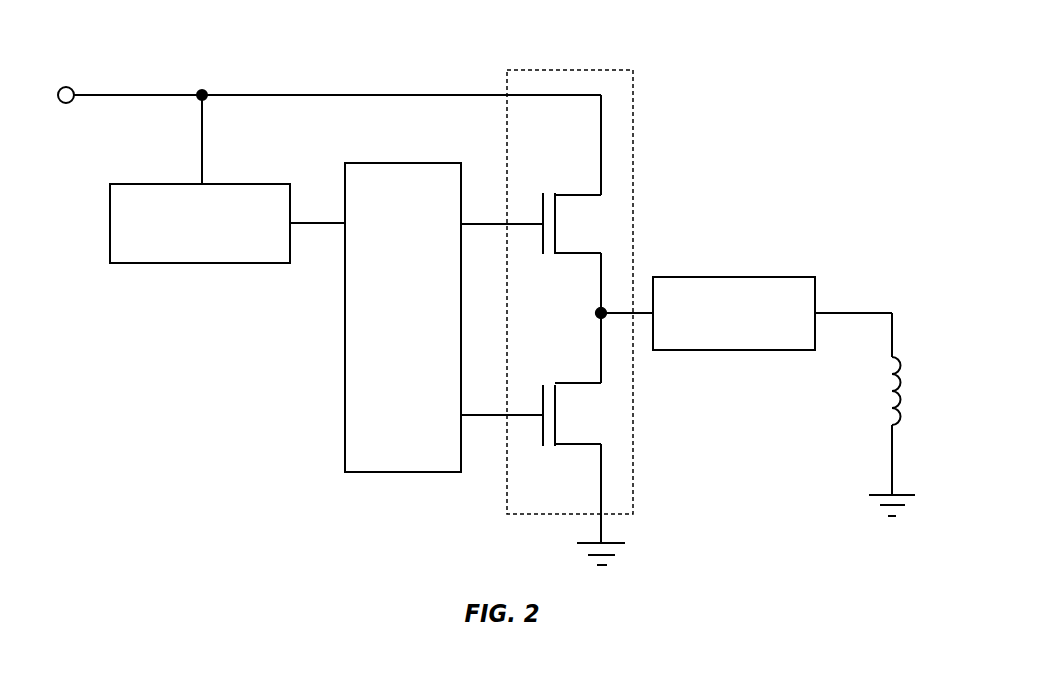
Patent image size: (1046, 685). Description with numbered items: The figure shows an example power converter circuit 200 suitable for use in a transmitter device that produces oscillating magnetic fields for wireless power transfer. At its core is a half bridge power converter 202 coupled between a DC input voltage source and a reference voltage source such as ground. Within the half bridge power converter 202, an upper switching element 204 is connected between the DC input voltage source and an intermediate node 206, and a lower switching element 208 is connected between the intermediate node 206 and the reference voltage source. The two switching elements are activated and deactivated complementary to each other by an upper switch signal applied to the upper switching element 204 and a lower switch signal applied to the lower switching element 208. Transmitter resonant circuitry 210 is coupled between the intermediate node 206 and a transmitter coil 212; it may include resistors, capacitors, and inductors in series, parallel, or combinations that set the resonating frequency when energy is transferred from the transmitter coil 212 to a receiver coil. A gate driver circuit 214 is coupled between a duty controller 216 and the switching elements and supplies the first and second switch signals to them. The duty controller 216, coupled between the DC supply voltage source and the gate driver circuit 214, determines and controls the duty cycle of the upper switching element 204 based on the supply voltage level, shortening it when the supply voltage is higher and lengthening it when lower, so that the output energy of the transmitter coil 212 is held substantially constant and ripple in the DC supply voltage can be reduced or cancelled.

The power converter circuit 200 is at (791, 88).
The half bridge power converter 202 is at (570, 70).
The upper switching element 204 is at (540, 176).
The intermediate node 206 is at (596, 313).
The lower switching element 208 is at (540, 453).
The transmitter resonant circuitry 210 is at (728, 277).
The transmitter coil 212 is at (900, 357).
The gate driver circuit 214 is at (400, 163).
The duty controller 216 is at (207, 264).